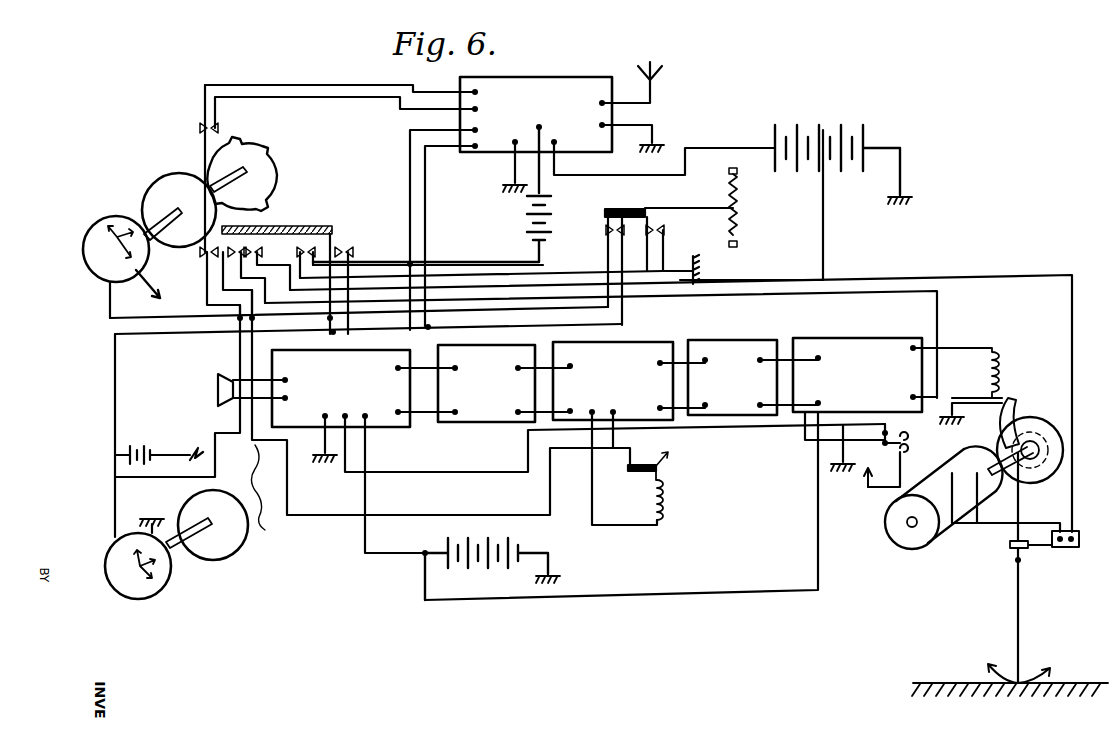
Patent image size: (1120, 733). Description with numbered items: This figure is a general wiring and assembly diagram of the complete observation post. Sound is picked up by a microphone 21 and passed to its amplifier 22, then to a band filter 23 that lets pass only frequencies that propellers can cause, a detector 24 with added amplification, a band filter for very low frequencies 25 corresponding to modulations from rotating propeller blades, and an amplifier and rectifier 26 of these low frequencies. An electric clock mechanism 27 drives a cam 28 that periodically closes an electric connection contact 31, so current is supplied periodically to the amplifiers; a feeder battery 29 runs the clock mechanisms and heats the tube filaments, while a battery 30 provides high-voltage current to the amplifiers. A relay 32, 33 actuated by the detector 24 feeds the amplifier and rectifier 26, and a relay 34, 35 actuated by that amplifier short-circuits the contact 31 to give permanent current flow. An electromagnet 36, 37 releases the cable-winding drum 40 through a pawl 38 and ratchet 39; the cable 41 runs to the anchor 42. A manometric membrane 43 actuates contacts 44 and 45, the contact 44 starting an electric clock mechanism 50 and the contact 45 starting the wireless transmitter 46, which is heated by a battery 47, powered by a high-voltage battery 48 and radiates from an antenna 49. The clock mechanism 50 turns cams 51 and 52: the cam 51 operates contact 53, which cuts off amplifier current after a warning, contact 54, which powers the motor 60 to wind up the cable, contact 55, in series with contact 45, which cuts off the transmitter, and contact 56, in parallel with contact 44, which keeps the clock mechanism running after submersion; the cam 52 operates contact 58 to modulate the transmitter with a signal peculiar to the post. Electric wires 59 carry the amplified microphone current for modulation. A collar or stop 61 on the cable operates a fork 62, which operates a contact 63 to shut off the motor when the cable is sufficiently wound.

The microphone 21 is at (216, 391).
The amplifier 22 is at (578, 451).
The band filter 23 is at (466, 383).
The detector 24 is at (595, 433).
The band filter for very low frequencies 25 is at (718, 377).
The amplifier and rectifier 26 is at (681, 469).
The electric clock mechanism 27 is at (165, 592).
The cam 28 is at (228, 554).
The feeder battery 29 is at (150, 452).
The battery 30 is at (491, 560).
The electric connection contact 31 is at (432, 428).
The relay 32 is at (670, 512).
The relay 33 is at (680, 466).
The relay 34 is at (888, 455).
The relay 35 is at (870, 492).
The electromagnet 36 is at (1002, 368).
The electromagnet 37 is at (998, 392).
The pawl 38 is at (1025, 421).
The ratchet 39 is at (1044, 445).
The cable-winding drum 40 is at (1063, 460).
The cable 41 is at (1034, 568).
The anchor 42 is at (1040, 672).
The manometric membrane 43 is at (737, 220).
The contact 44 is at (604, 230).
The contact 45 is at (665, 232).
The wireless transmitter 46 is at (490, 203).
The battery 47 is at (432, 194).
The high-voltage battery 48 is at (824, 134).
The antenna 49 is at (662, 82).
The electric clock mechanism 50 is at (110, 218).
The cam 51 is at (152, 186).
The cam 52 is at (273, 190).
The contact 53 is at (203, 256).
The contact 54 is at (254, 251).
The contact 55 is at (300, 222).
The contact 56 is at (350, 250).
The contact 58 is at (218, 128).
The electric wires 59 is at (435, 223).
The motor 60 is at (935, 540).
The collar or stop 61 is at (1015, 562).
The fork 62 is at (1008, 546).
The contact 63 is at (1064, 548).